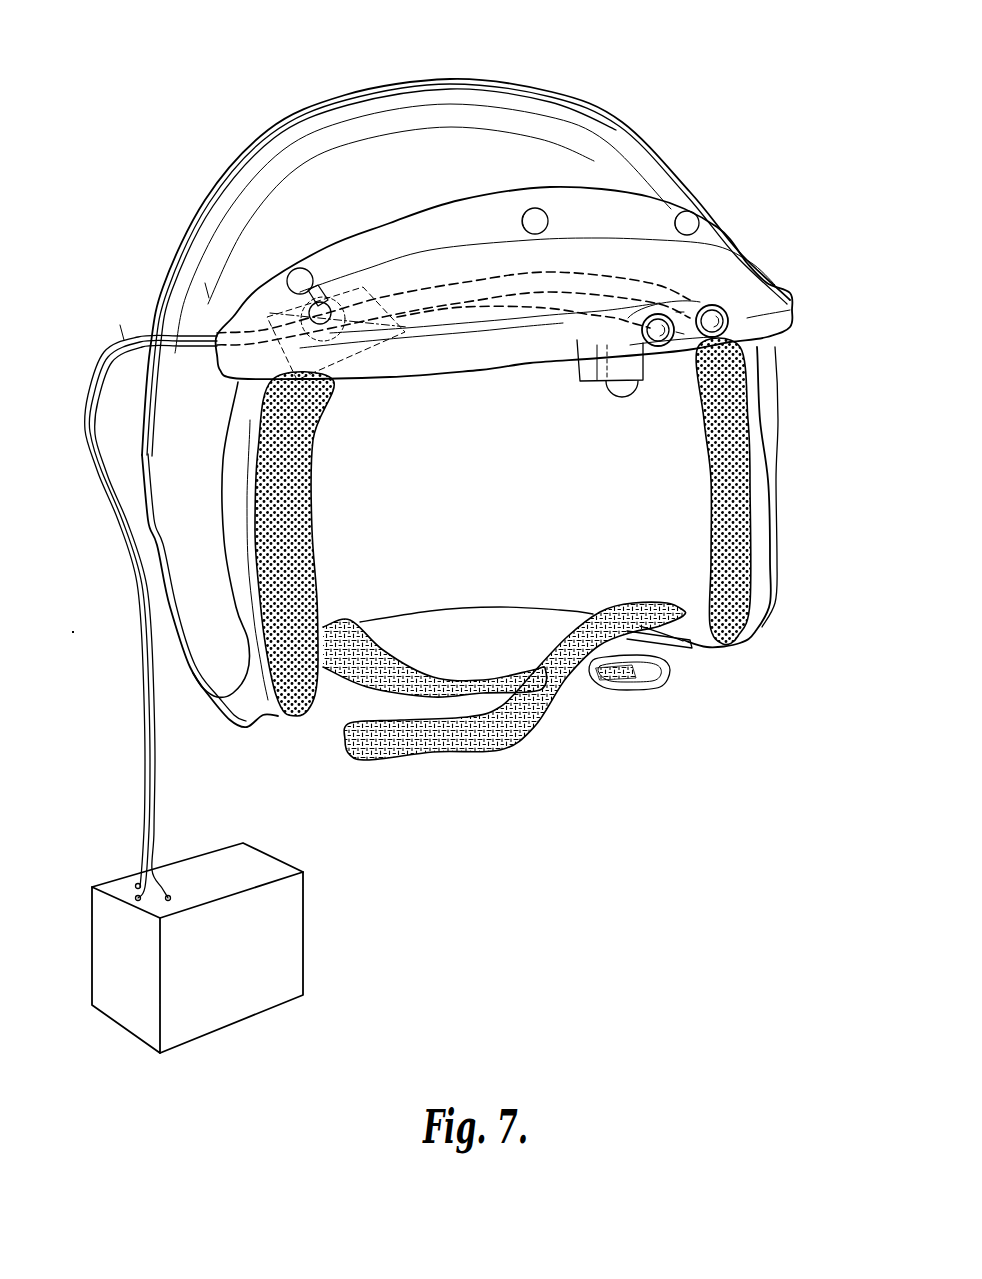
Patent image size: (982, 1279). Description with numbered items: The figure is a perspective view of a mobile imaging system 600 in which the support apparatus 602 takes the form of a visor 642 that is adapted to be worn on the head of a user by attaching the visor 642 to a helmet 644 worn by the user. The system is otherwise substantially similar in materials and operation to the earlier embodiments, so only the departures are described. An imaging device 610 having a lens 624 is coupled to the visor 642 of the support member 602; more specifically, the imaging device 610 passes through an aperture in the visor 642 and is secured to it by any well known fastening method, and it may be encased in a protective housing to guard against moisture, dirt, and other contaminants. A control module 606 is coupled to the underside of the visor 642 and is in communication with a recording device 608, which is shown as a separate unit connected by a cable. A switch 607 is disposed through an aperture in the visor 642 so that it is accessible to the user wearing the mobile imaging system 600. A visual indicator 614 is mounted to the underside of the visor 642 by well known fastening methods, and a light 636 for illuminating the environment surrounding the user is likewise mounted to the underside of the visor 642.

The mobile imaging system 600 is at (611, 790).
The support apparatus 602 is at (771, 437).
The control module 606 is at (357, 333).
The switch 607 is at (306, 272).
The recording device 608 is at (293, 910).
The imaging device 610 is at (633, 315).
The visual indicator 614 is at (590, 375).
The lens 624 is at (670, 347).
The light 636 is at (713, 310).
The visor 642 is at (245, 313).
The helmet 644 is at (530, 88).